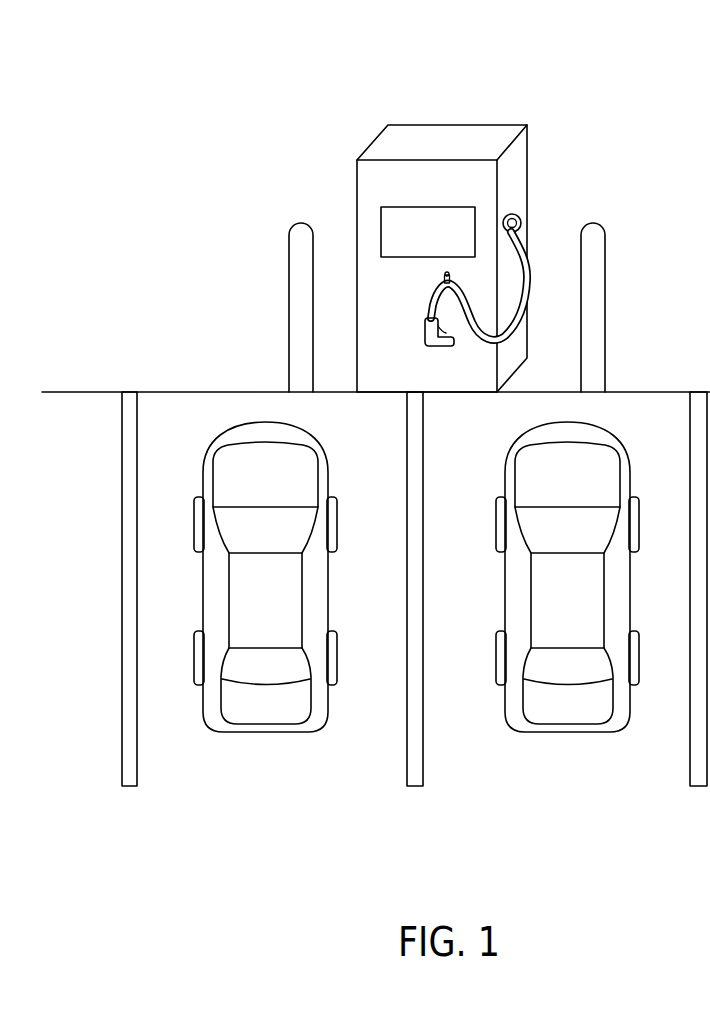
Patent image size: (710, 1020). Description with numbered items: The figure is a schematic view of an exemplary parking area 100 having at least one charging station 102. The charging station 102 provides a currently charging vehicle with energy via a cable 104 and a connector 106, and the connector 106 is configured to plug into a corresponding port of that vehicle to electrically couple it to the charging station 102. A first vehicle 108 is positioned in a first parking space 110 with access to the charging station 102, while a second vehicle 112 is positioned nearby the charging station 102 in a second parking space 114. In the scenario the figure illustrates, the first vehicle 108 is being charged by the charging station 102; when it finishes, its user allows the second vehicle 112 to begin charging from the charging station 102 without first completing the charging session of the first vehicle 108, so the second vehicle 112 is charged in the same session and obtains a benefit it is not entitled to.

The parking area 100 is at (243, 86).
The charging station 102 is at (425, 153).
The cable 104 is at (527, 245).
The connector 106 is at (422, 333).
The first vehicle 108 is at (552, 607).
The first parking space 110 is at (703, 800).
The second vehicle 112 is at (249, 607).
The second parking space 114 is at (410, 800).